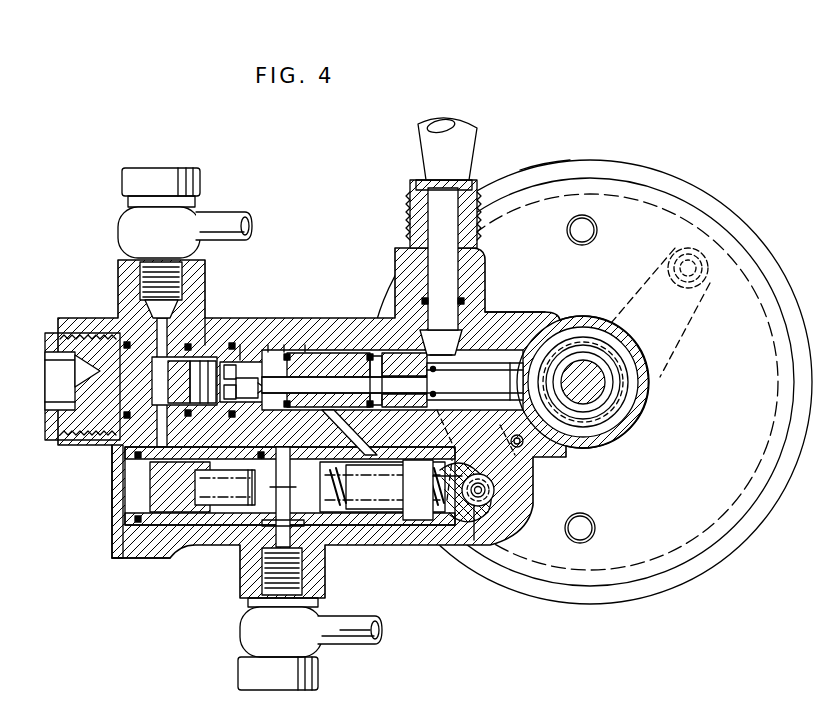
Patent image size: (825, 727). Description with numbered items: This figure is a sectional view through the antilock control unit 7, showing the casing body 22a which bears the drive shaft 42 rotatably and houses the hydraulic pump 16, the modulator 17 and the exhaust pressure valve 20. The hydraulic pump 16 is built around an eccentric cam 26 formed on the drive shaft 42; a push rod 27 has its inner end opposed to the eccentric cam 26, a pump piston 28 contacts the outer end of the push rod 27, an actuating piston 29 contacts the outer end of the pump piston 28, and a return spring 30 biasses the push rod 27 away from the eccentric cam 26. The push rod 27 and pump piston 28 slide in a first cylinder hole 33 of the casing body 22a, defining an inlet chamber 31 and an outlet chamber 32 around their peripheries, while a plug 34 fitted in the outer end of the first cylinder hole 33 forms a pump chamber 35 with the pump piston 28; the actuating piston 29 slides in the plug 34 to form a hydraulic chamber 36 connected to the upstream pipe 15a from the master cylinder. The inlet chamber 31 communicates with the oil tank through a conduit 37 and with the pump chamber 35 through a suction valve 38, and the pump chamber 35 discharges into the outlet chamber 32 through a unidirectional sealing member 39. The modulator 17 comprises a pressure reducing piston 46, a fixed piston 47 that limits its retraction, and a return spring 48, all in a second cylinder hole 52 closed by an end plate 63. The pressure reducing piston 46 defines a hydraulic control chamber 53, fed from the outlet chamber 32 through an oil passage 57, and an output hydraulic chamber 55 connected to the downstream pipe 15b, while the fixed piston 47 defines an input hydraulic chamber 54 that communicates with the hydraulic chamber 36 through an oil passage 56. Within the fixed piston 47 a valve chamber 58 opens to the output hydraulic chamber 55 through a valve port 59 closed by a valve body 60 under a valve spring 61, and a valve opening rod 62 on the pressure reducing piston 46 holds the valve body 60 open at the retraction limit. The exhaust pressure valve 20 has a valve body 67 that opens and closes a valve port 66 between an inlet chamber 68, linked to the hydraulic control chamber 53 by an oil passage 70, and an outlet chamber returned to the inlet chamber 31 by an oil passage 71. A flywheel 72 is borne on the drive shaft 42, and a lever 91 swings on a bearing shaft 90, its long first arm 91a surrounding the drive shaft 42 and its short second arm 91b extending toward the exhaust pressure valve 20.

The antilock control unit 7 is at (544, 160).
The upstream pipe 15a is at (318, 224).
The downstream pipe 15b is at (398, 630).
The hydraulic pump 16 is at (346, 367).
The modulator 17 is at (240, 536).
The exhaust pressure valve 20 is at (474, 505).
The casing body 22a is at (533, 316).
The eccentric cam 26 is at (612, 389).
The push rod 27 is at (482, 365).
The pump piston 28 is at (336, 345).
The actuating piston 29 is at (205, 375).
The return spring 30 is at (475, 382).
The inlet chamber 31 is at (452, 360).
The outlet chamber 32 is at (309, 345).
The first cylinder hole 33 is at (244, 345).
The plug 34 is at (58, 340).
The pump chamber 35 is at (212, 340).
The hydraulic chamber 36 is at (160, 348).
The conduit 37 is at (428, 152).
The suction valve 38 is at (272, 345).
The unidirectional sealing member 39 is at (289, 345).
The drive shaft 42 is at (605, 370).
The pressure reducing piston 46 is at (353, 515).
The fixed piston 47 is at (182, 525).
The return spring 48 is at (368, 518).
The second cylinder hole 52 is at (398, 518).
The hydraulic control chamber 53 is at (421, 515).
The input hydraulic chamber 54 is at (153, 450).
The output hydraulic chamber 55 is at (300, 519).
The oil passage 56 is at (153, 437).
The oil passage 57 is at (350, 432).
The valve chamber 58 is at (208, 500).
The valve port 59 is at (265, 480).
The valve body 60 is at (240, 466).
The valve spring 61 is at (197, 494).
The valve opening rod 62 is at (286, 476).
The end plate 63 is at (116, 511).
The valve port 66 is at (481, 498).
The valve body 67 is at (494, 486).
The inlet chamber 68 is at (493, 493).
The oil passage 70 is at (450, 500).
The oil passage 71 is at (447, 433).
The flywheel 72 is at (739, 502).
The bearing shaft 90 is at (510, 441).
The lever 91 is at (704, 284).
The first arm 91a is at (682, 334).
The second arm 91b is at (565, 466).